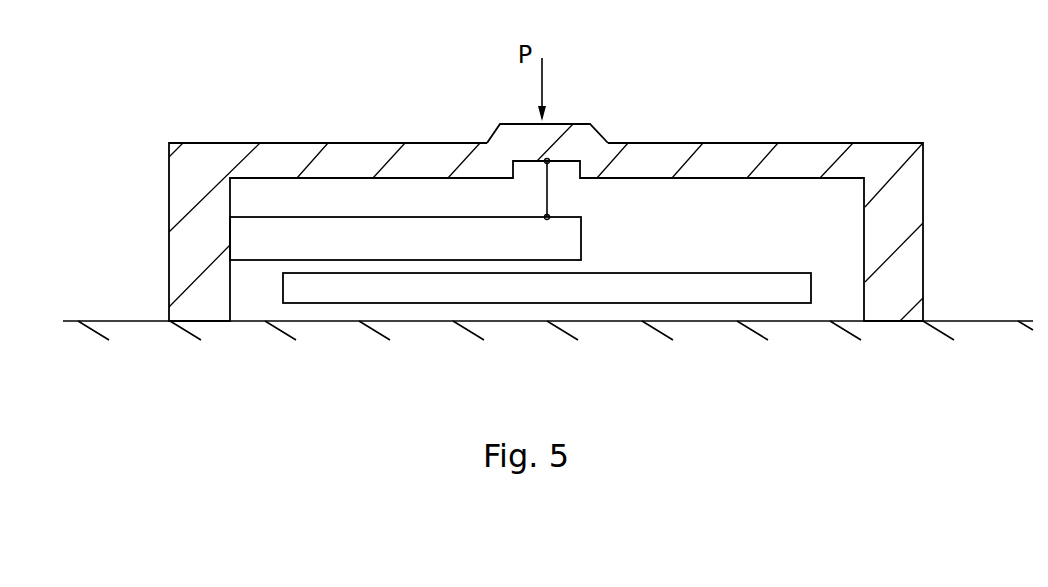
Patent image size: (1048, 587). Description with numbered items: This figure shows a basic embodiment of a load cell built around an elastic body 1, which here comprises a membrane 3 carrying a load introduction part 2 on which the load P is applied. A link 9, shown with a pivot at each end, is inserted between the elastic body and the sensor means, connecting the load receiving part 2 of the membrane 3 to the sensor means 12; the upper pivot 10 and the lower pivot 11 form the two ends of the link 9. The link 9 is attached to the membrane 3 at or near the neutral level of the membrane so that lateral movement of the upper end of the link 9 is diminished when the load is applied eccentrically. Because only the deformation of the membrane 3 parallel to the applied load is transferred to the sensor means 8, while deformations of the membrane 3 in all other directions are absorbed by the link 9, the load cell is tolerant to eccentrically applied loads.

The elastic body 1 is at (898, 217).
The load introduction part 2 is at (588, 124).
The membrane 3 is at (335, 162).
The sensor means 8 is at (547, 288).
The link 9 is at (550, 192).
The upper contact point 10 is at (549, 160).
The lower contact point 11 is at (550, 218).
The sensor means 12 is at (250, 237).